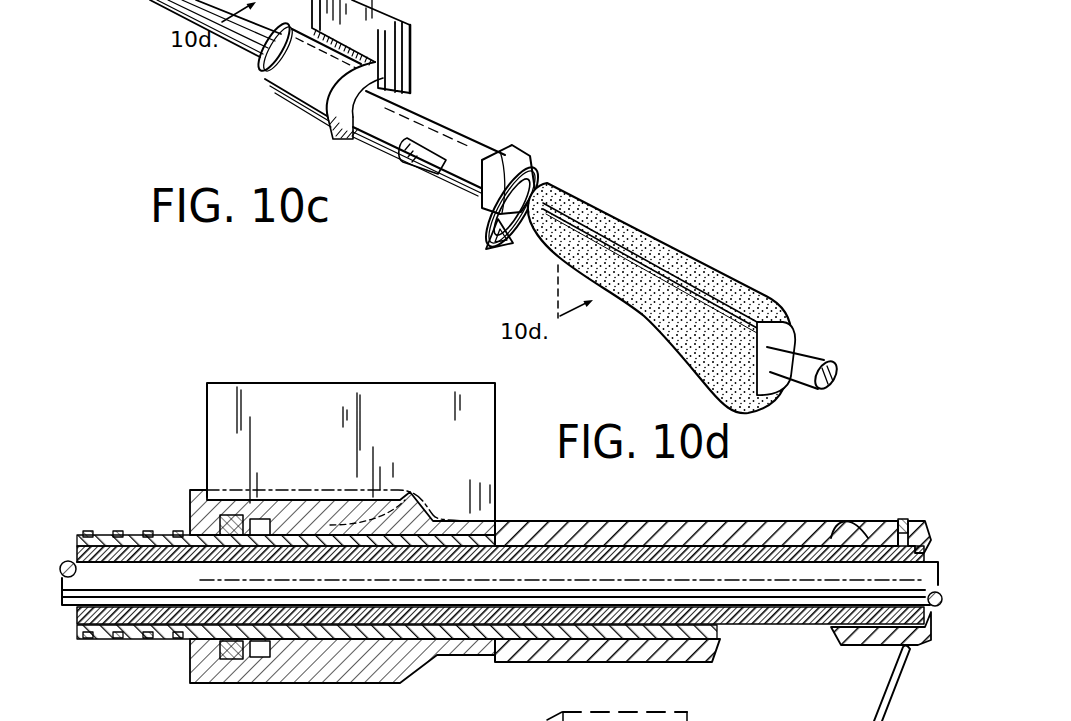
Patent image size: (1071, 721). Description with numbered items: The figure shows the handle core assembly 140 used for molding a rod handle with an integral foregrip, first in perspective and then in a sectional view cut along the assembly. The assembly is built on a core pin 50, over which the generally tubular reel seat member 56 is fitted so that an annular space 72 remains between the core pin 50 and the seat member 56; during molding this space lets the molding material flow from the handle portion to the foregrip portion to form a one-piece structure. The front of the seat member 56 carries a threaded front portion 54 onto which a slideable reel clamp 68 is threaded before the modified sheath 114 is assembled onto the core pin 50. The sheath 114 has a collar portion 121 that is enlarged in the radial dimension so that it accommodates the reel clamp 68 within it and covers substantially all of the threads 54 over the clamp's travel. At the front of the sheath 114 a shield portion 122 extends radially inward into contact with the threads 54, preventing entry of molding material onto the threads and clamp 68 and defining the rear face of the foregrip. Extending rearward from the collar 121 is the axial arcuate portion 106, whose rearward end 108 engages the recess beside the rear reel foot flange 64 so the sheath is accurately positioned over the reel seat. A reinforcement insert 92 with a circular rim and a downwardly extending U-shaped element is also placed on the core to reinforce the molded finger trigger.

In FIG. 10C, the core pin 50 is at (812, 360).
In FIG. 10D, the core pin 50 is at (735, 594).
In FIG. 10D, the threaded front portion 54 is at (137, 641).
In FIG. 10D, the reel seat member 56 is at (793, 521).
In FIG. 10D, the rear reel foot flange 64 is at (838, 522).
In FIG. 10D, the slideable reel clamp 68 is at (207, 519).
In FIG. 10D, the annular space 72 is at (97, 534).
In FIG. 10C, the reinforcement insert 92 is at (485, 248).
In FIG. 10D, the reinforcement insert 92 is at (874, 700).
In FIG. 10D, the axial arcuate portion 106 is at (707, 521).
In FIG. 10D, the rearward end 108 is at (859, 521).
In FIG. 10C, the modified sheath 114 is at (285, 79).
In FIG. 10D, the modified sheath 114 is at (198, 430).
In FIG. 10C, the collar portion 121 is at (322, 129).
In FIG. 10D, the collar portion 121 is at (329, 501).
In FIG. 10D, the shield portion 122 is at (192, 665).
In FIG. 10C, the handle core assembly 140 is at (498, 128).